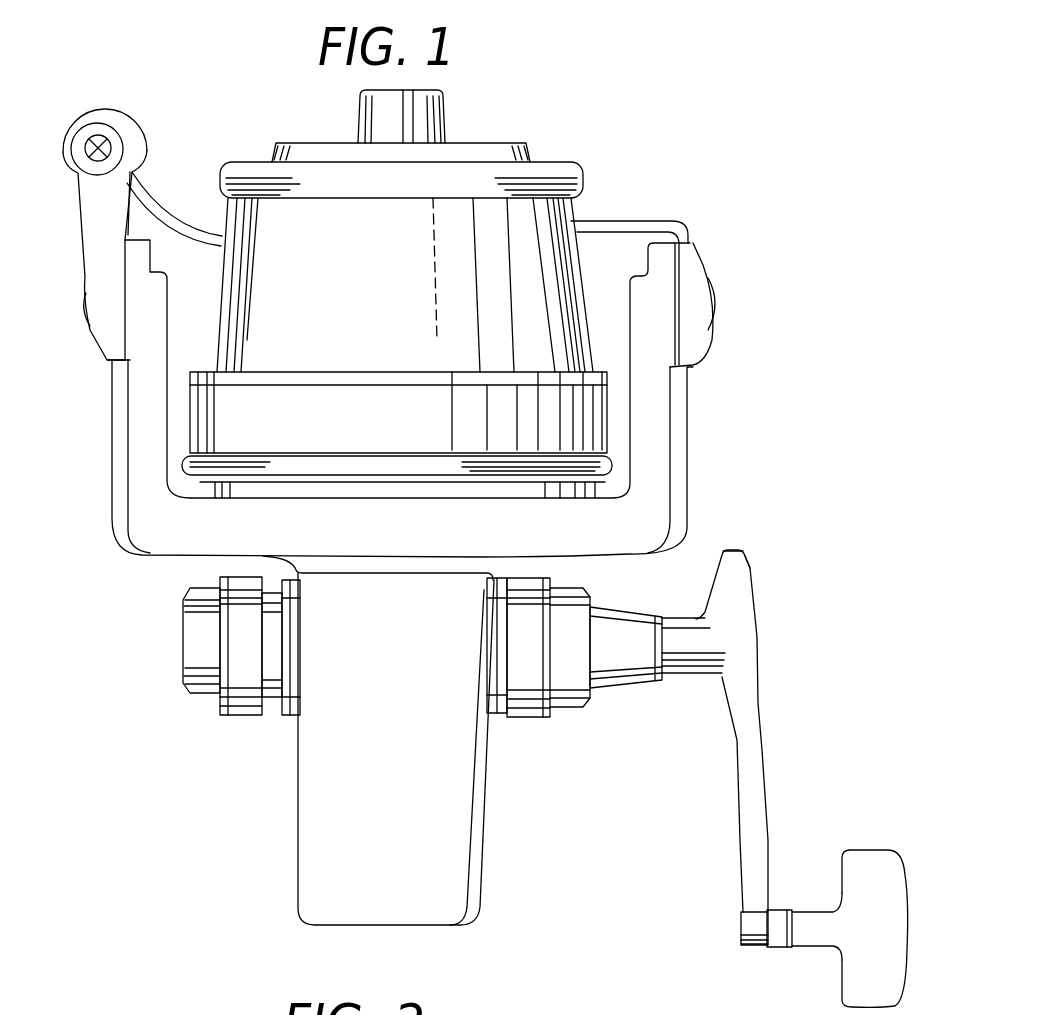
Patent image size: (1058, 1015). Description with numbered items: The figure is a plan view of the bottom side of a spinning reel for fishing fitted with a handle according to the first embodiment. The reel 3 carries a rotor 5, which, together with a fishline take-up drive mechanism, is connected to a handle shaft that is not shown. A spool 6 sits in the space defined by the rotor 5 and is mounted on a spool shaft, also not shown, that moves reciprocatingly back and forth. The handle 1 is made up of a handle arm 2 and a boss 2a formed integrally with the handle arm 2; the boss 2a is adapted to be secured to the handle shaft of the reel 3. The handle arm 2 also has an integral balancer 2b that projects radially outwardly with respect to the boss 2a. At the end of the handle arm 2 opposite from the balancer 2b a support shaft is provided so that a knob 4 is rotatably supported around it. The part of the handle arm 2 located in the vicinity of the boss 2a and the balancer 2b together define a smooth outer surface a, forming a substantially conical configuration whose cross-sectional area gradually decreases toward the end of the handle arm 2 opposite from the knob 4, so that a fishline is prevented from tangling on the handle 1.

The handle 1 is at (776, 651).
The handle arm 2 is at (770, 727).
The boss 2a is at (693, 674).
The balancer 2b is at (734, 562).
The outer surface a is at (751, 566).
The reel 3 is at (652, 191).
The knob 4 is at (878, 862).
The rotor 5 is at (691, 423).
The spool 6 is at (566, 171).